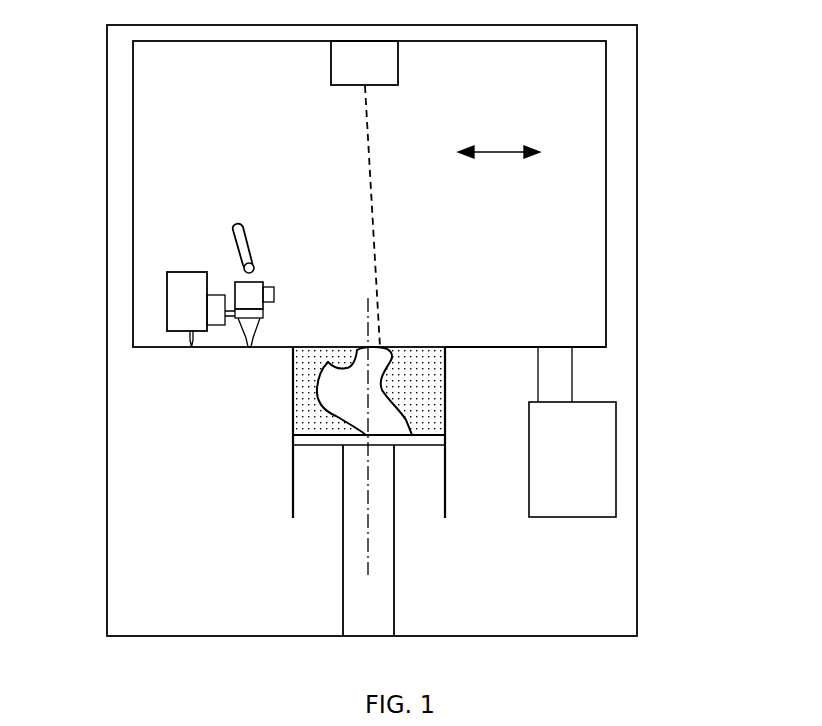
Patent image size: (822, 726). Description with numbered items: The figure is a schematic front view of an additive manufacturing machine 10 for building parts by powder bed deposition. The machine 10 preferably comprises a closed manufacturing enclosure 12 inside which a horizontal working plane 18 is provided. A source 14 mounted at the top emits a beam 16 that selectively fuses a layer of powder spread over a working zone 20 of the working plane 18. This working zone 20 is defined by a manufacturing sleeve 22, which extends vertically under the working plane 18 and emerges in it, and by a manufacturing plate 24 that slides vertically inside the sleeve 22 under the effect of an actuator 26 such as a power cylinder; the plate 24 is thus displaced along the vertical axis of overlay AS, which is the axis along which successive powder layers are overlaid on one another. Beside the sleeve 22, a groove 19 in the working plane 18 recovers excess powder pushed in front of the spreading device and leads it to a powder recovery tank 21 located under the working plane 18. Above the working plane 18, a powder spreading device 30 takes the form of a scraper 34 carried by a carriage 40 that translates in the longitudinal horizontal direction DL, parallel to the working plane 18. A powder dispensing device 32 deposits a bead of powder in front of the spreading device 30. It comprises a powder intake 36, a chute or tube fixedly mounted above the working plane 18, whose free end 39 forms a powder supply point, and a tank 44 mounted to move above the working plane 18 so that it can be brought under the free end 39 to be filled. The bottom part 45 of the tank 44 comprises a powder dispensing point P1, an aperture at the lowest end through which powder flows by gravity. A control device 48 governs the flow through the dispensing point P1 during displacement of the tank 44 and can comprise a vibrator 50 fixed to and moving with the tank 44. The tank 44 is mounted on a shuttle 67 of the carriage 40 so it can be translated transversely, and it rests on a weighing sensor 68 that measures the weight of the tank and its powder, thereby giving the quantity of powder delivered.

The additive manufacturing machine 10 is at (650, 83).
The manufacturing enclosure 12 is at (607, 167).
The source 14 is at (399, 63).
The beam 16 is at (372, 186).
The longitudinal horizontal direction DL is at (499, 140).
The working plane 18 is at (505, 346).
The groove 19 is at (565, 380).
The working zone 20 is at (431, 345).
The powder recovery tank 21 is at (604, 483).
The manufacturing sleeve 22 is at (447, 506).
The manufacturing plate 24 is at (322, 446).
The actuator 26 is at (383, 590).
The axis of overlay AS is at (369, 555).
The powder spreading device 30 is at (178, 262).
The powder dispensing device 32 is at (280, 232).
The scraper 34 is at (185, 334).
The powder intake 36 is at (236, 228).
The free end 39 is at (262, 262).
The carriage 40 is at (172, 293).
The tank 44 is at (240, 282).
The bottom part 45 is at (253, 332).
The control device 48 is at (285, 293).
The vibrator 50 is at (272, 303).
The shuttle 67 is at (220, 323).
The weighing sensor 68 is at (230, 307).
The powder dispensing point P1 is at (250, 337).